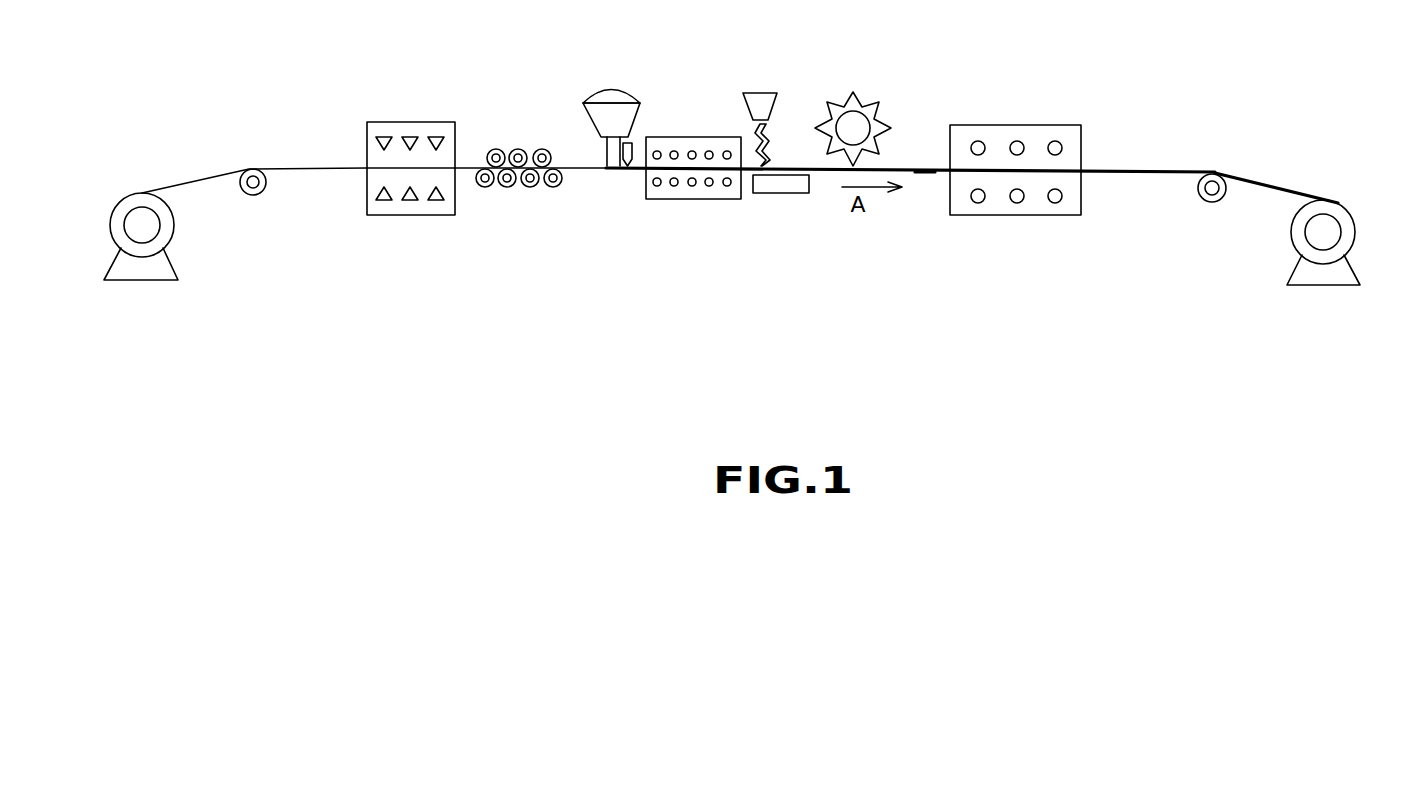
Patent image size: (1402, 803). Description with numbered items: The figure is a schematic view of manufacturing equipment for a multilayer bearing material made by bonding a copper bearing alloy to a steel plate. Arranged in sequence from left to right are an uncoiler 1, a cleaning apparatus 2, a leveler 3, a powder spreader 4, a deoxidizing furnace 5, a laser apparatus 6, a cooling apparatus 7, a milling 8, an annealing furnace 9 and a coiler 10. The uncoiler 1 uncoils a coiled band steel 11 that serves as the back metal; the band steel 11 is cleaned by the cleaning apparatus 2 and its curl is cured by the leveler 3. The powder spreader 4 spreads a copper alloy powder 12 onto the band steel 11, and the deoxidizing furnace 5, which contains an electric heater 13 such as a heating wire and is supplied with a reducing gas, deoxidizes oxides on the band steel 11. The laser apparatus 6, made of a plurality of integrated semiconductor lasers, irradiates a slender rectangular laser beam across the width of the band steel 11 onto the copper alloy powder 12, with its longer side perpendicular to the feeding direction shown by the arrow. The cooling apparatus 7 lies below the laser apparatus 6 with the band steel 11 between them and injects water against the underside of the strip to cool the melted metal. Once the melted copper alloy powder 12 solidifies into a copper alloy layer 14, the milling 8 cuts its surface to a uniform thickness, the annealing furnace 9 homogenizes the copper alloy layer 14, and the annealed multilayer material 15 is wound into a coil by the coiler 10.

The uncoiler 1 is at (133, 190).
The cleaning apparatus 2 is at (427, 122).
The leveler 3 is at (517, 148).
The powder spreader 4 is at (620, 83).
The deoxidizing furnace 5 is at (698, 137).
The laser apparatus 6 is at (779, 115).
The cooling apparatus 7 is at (785, 197).
The milling 8 is at (885, 102).
The annealing furnace 9 is at (1055, 125).
The coiler 10 is at (1340, 202).
The band steel 11 is at (306, 165).
The copper alloy powder 12 is at (636, 166).
The electric heater 13 is at (675, 192).
The copper alloy layer 14 is at (922, 167).
The multilayer material 15 is at (928, 193).